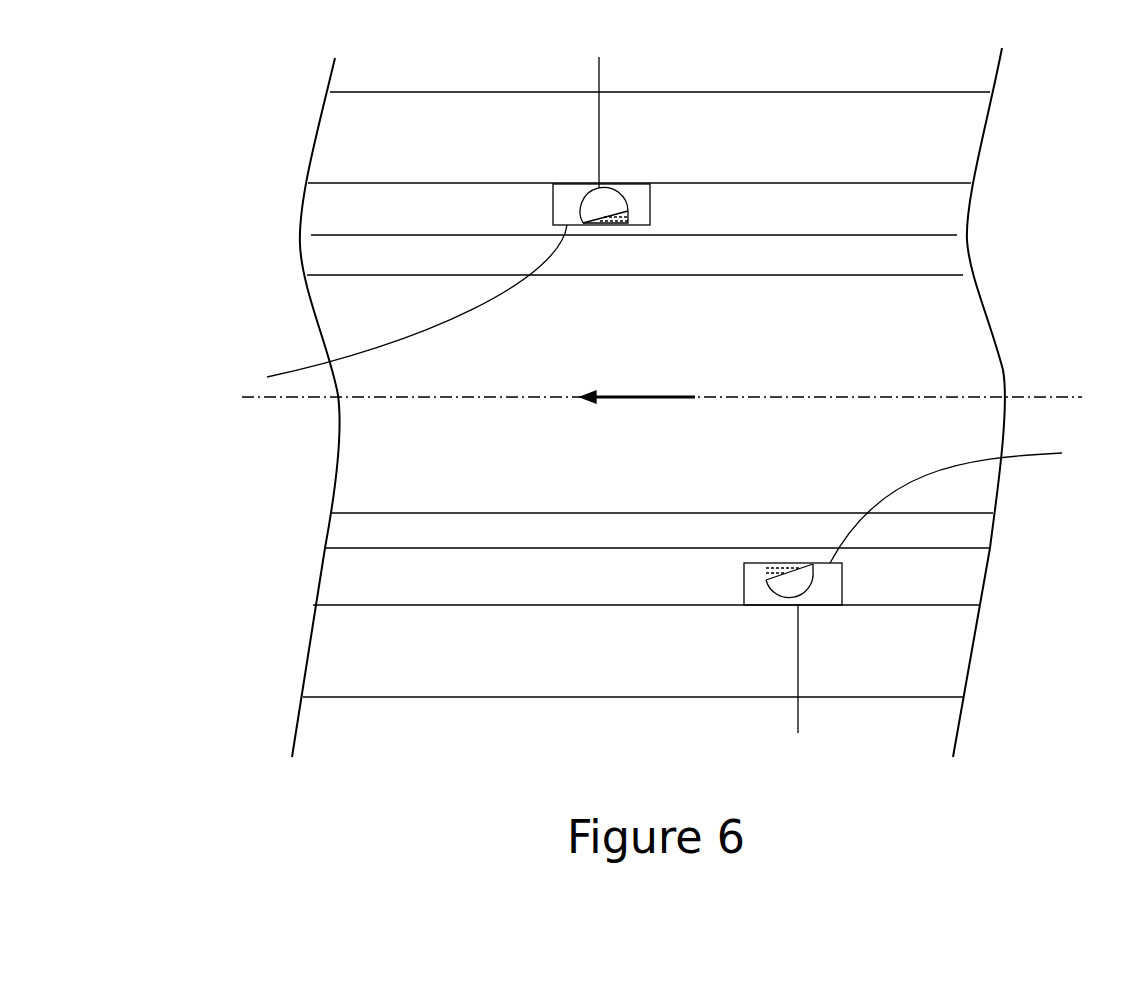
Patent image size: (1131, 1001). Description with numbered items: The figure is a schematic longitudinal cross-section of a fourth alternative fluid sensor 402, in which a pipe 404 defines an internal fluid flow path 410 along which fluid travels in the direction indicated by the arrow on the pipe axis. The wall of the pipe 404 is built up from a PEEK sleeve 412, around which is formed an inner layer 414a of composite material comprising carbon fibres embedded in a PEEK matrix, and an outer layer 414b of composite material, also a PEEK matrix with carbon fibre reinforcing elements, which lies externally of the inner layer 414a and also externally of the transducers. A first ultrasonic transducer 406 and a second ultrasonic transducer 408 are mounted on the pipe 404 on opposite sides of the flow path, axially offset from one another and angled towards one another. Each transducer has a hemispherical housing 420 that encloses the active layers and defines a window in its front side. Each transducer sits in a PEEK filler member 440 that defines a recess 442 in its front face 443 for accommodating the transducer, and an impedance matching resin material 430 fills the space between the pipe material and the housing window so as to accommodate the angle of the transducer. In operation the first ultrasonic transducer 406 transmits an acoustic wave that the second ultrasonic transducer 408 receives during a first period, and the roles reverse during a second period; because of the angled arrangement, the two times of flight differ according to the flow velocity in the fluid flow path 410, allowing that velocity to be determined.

The fluid sensor 402 is at (405, 758).
The pipe 404 is at (546, 201).
The first ultrasonic transducer 406 is at (625, 172).
The second ultrasonic transducer 408 is at (780, 618).
The fluid flow path 410 is at (503, 467).
The PEEK sleeve 412 is at (318, 255).
The inner layer of composite material 414a is at (328, 213).
The outer layer of composite material 414b is at (360, 140).
The hemispherical housing 420 is at (699, 413).
The impedance matching resin material 430 is at (622, 225).
The PEEK filler member 440 is at (570, 197).
The recess 442 is at (583, 193).
The front face 443 is at (663, 394).